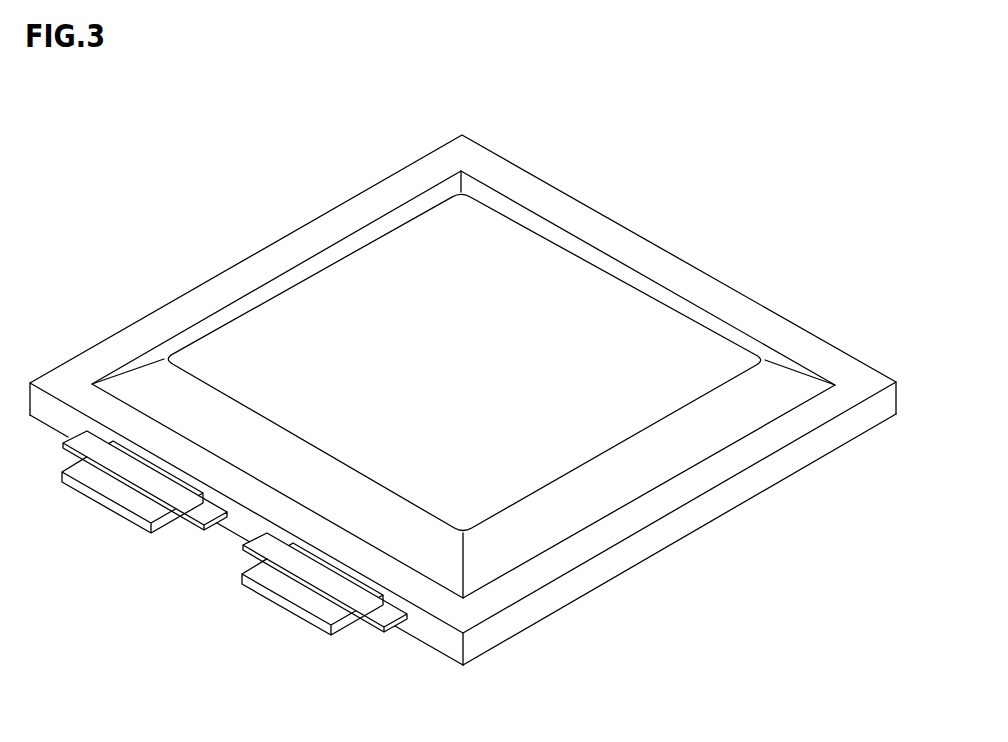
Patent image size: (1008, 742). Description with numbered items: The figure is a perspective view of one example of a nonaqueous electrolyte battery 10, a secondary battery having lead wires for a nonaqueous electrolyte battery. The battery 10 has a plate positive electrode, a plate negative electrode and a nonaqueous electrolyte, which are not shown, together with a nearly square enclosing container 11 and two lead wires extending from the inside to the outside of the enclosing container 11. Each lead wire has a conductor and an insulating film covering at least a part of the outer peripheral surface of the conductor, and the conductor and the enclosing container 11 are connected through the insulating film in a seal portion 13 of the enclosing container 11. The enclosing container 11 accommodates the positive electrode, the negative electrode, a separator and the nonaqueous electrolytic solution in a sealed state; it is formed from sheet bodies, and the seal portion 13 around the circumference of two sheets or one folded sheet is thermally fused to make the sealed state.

The nonaqueous electrolyte battery 10 is at (463, 401).
The enclosing container 11 is at (607, 302).
The seal portion 13 is at (577, 550).